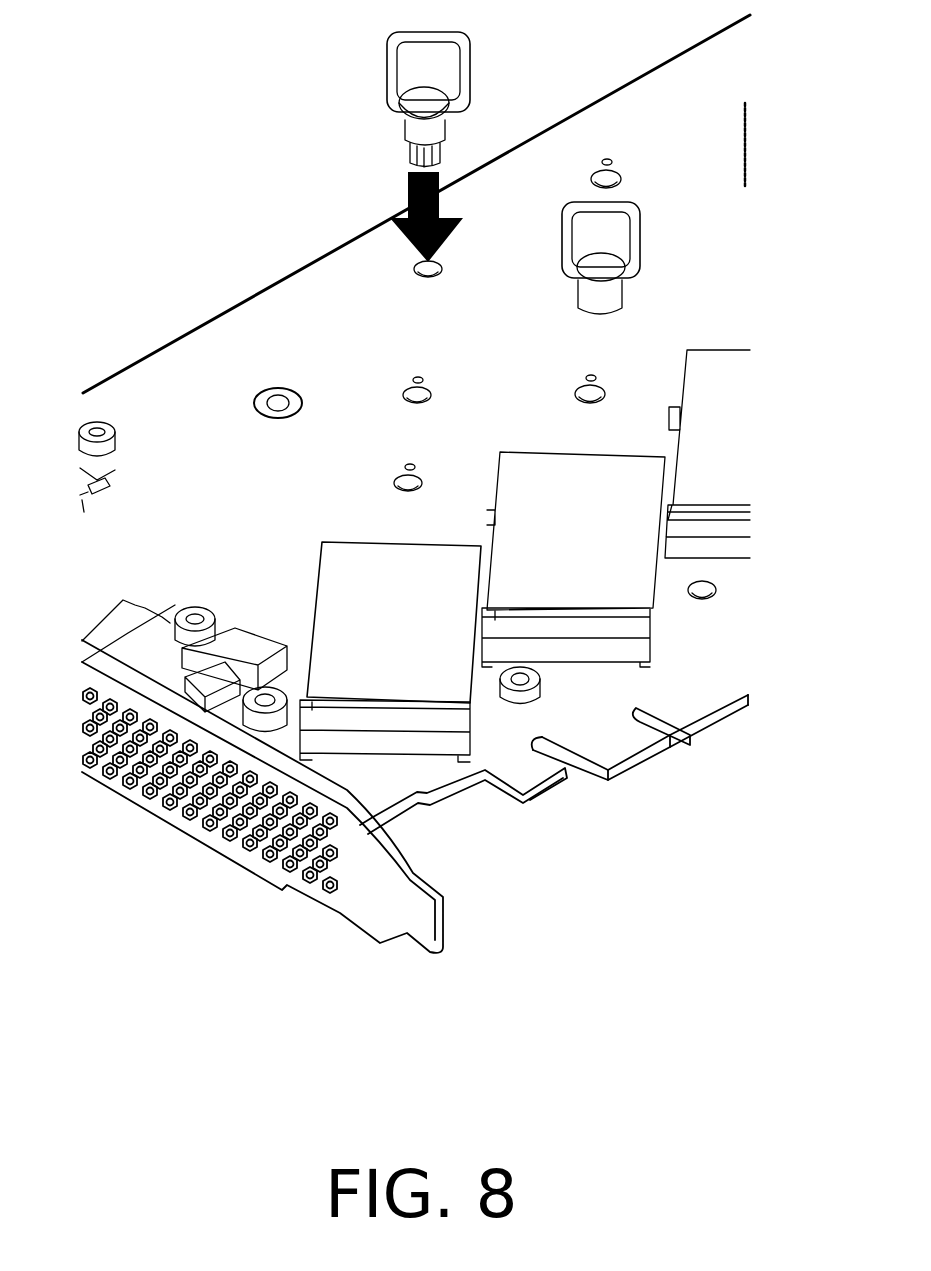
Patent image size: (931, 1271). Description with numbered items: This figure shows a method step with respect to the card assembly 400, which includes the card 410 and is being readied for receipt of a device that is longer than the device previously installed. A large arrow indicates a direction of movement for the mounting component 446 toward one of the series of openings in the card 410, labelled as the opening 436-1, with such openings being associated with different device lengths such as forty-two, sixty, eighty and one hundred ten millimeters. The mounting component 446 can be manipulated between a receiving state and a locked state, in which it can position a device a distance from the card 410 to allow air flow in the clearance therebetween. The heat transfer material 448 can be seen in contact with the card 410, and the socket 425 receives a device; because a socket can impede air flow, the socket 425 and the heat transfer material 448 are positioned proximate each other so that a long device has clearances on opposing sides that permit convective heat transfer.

The card assembly 400 is at (220, 132).
The card 410 is at (273, 525).
The mounting component 446 is at (389, 62).
The opening 436-1 is at (402, 546).
The heat transfer material 448 is at (411, 615).
The socket 425 is at (396, 720).